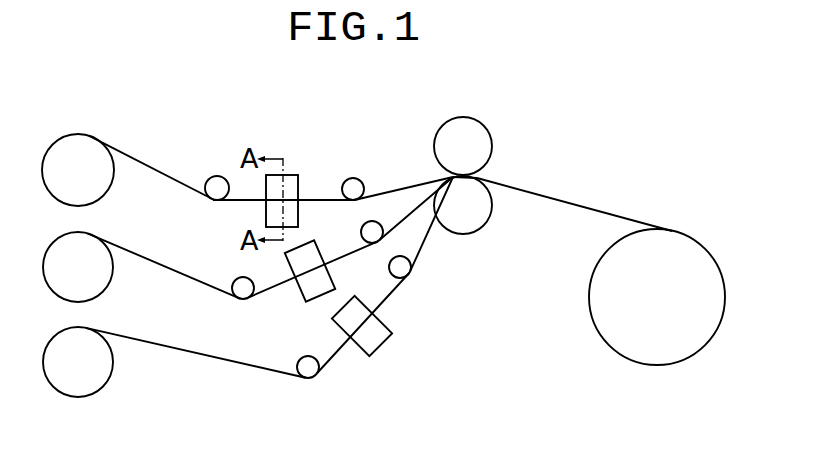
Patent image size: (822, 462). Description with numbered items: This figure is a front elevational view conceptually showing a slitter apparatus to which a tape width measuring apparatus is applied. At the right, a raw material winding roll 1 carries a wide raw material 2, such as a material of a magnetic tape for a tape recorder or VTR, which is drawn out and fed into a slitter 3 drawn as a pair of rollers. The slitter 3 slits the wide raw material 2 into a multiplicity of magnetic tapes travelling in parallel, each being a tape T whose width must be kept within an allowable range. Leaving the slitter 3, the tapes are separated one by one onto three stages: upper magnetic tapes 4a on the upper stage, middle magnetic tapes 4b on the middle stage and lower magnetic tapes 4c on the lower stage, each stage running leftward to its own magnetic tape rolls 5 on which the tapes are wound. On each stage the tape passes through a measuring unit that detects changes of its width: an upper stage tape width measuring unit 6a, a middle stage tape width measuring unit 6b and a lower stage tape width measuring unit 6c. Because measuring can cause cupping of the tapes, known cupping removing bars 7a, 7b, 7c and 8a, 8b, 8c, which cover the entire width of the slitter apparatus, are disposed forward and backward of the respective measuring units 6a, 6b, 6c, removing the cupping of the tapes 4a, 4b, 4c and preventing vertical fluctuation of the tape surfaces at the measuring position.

The raw material winding roll 1 is at (708, 282).
The wide raw material 2 is at (598, 207).
The slitter 3 is at (478, 128).
The upper magnetic tapes 4a is at (140, 159).
The middle magnetic tapes 4b is at (160, 265).
The lower magnetic tapes 4c is at (175, 352).
The magnetic tape rolls 5 is at (77, 142).
The upper stage tape width measuring unit 6a is at (298, 180).
The middle stage tape width measuring unit 6b is at (314, 293).
The lower stage tape width measuring unit 6c is at (379, 341).
The cupping removing bar 7a is at (355, 180).
The cupping removing bar 7b is at (382, 245).
The cupping removing bar 7c is at (414, 270).
The cupping removing bar 8a is at (212, 180).
The cupping removing bar 8b is at (242, 290).
The cupping removing bar 8c is at (307, 378).
The tape T is at (400, 187).